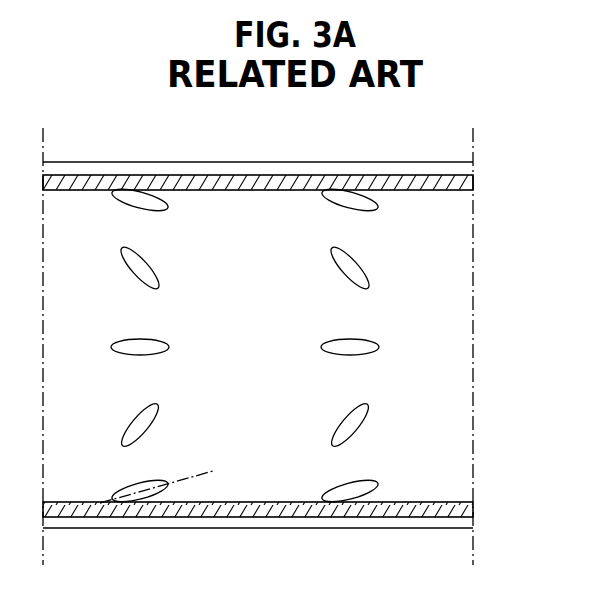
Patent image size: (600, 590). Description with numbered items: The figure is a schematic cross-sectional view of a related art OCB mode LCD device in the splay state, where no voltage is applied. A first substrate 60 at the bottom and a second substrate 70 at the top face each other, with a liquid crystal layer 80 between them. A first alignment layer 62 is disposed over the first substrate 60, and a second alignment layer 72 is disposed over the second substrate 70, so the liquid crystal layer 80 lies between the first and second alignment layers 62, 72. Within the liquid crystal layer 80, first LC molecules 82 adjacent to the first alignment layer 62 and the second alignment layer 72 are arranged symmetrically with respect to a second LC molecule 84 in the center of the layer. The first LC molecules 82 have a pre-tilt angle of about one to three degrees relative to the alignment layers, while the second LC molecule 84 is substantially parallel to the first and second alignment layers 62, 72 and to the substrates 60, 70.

The first substrate 60 is at (455, 522).
The first alignment layer 62 is at (460, 507).
The second substrate 70 is at (455, 167).
The second alignment layer 72 is at (470, 183).
The liquid crystal layer 80 is at (473, 502).
The first LC molecules 82 is at (165, 206).
The second LC molecule 84 is at (165, 350).